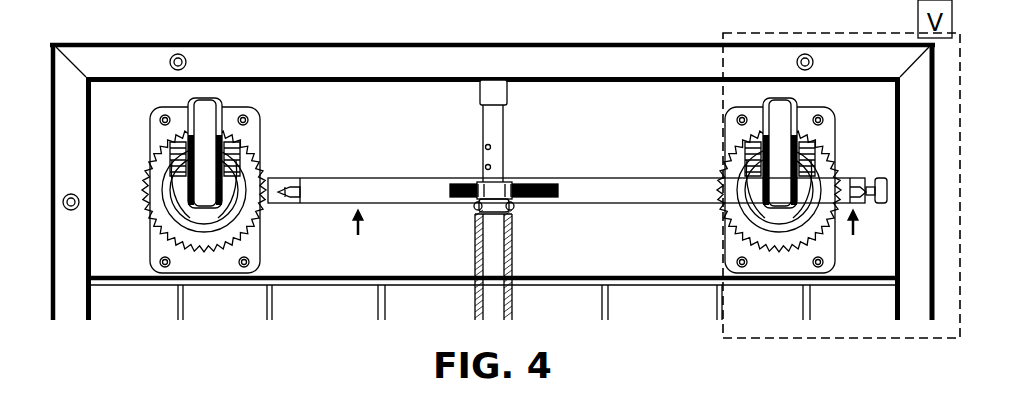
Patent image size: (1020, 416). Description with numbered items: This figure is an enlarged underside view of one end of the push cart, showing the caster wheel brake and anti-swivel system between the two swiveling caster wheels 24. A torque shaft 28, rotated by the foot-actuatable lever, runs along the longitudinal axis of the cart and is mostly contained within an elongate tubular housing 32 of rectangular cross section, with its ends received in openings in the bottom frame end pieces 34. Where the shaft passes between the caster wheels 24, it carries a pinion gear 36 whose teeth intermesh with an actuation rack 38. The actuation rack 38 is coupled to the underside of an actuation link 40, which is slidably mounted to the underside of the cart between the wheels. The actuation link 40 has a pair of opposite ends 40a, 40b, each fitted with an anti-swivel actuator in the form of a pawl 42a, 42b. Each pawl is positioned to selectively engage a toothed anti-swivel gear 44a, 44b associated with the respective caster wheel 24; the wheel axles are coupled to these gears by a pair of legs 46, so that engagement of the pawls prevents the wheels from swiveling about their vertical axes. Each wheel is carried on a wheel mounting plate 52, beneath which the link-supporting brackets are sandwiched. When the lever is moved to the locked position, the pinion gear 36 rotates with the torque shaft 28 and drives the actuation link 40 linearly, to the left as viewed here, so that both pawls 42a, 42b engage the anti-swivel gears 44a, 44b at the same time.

The swiveling caster wheel 24 is at (202, 100).
The torque shaft 28 is at (500, 130).
The elongate tubular housing 32 is at (493, 280).
The bottom frame end piece 34 is at (405, 67).
The pinion gear 36 is at (468, 178).
The actuation rack 38 is at (548, 180).
The actuation link 40 is at (628, 203).
The end of actuation link 40a is at (359, 240).
The end of actuation link 40b is at (860, 240).
The pawl 42a is at (293, 183).
The pawl 42b is at (863, 192).
The anti-swivel gear 44a is at (168, 225).
The anti-swivel gear 44b is at (735, 218).
The legs 46 is at (177, 177).
The wheel mounting plate 52 is at (260, 270).